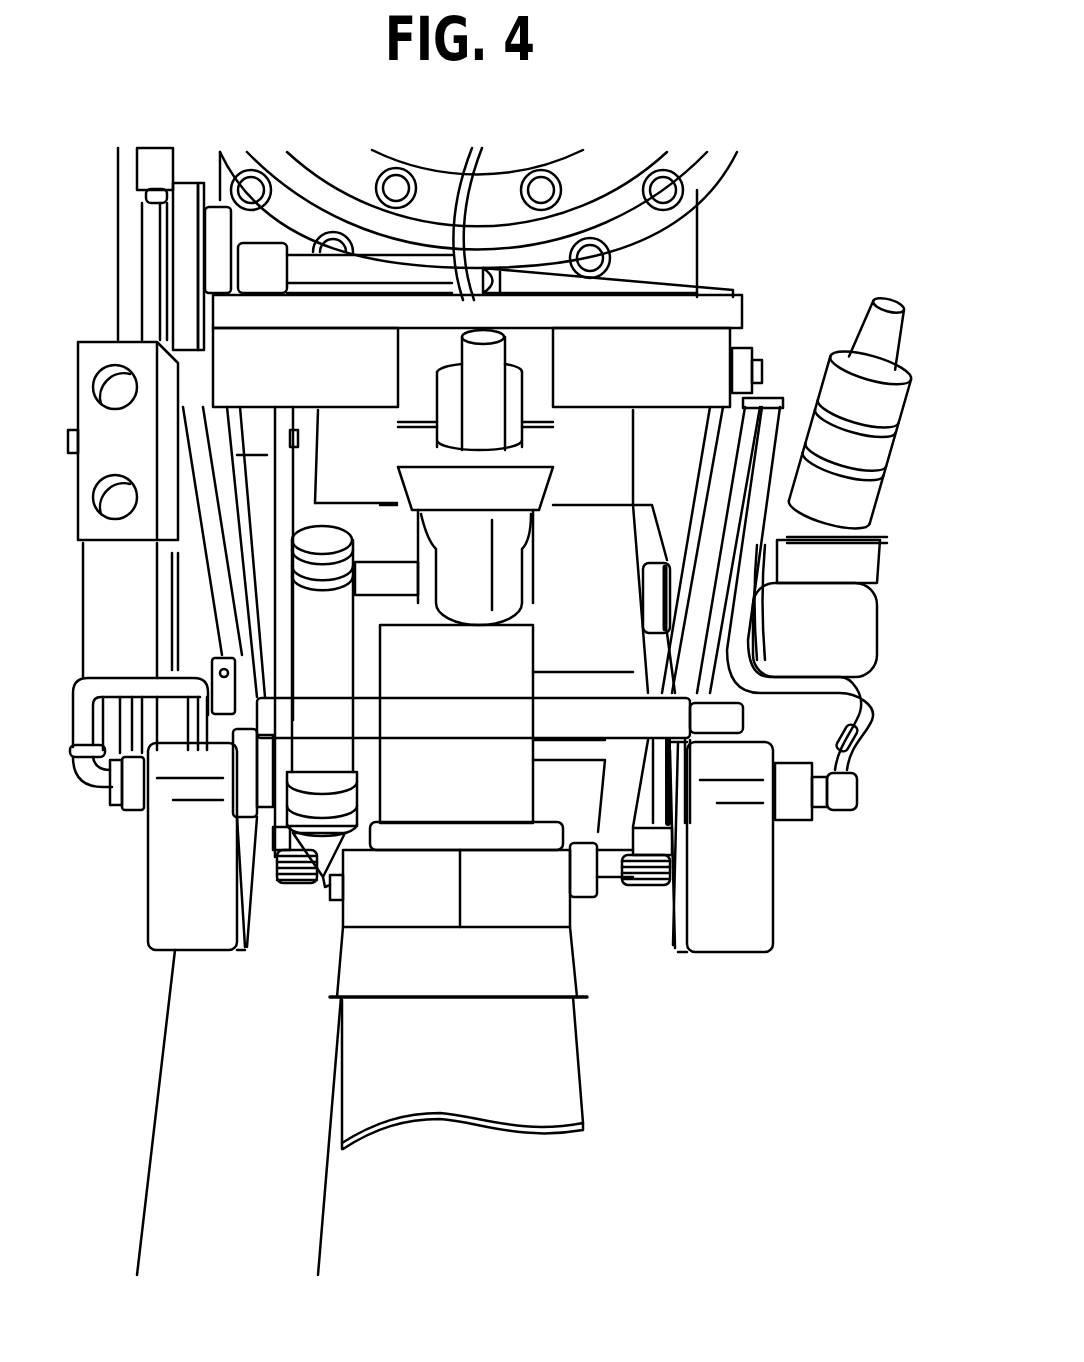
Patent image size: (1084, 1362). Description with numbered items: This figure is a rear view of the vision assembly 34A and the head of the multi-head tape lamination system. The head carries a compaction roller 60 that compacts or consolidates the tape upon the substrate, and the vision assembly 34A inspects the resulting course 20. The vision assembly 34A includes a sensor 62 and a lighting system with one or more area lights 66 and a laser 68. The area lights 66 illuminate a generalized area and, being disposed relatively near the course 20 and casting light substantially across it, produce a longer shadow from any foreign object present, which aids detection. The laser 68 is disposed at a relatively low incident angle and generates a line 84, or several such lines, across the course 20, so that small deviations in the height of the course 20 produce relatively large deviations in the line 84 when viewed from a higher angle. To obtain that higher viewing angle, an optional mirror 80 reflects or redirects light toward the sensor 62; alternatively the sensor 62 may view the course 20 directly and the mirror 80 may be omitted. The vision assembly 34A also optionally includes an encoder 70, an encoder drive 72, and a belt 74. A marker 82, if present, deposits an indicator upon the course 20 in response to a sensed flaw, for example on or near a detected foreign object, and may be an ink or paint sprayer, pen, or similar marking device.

The vision assembly 34A is at (782, 172).
The laser 68 is at (502, 332).
The sensor 62 is at (513, 367).
The marker 82 is at (326, 548).
The belt 74 is at (650, 598).
The mirror 80 is at (480, 683).
The encoder 70 is at (860, 623).
The area lights 66 is at (153, 855).
The encoder drive 72 is at (512, 843).
The compaction roller 60 is at (557, 900).
The line 84 is at (540, 1000).
The course 20 is at (310, 1223).